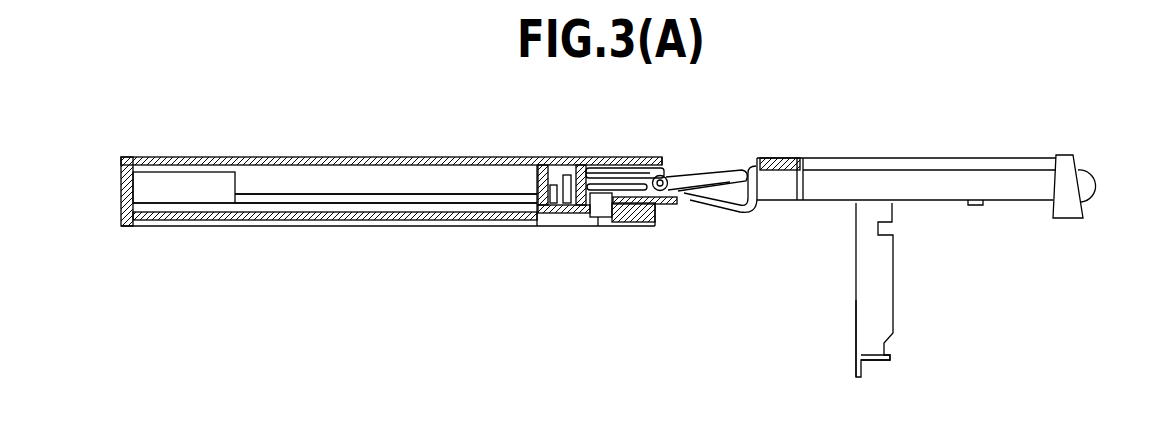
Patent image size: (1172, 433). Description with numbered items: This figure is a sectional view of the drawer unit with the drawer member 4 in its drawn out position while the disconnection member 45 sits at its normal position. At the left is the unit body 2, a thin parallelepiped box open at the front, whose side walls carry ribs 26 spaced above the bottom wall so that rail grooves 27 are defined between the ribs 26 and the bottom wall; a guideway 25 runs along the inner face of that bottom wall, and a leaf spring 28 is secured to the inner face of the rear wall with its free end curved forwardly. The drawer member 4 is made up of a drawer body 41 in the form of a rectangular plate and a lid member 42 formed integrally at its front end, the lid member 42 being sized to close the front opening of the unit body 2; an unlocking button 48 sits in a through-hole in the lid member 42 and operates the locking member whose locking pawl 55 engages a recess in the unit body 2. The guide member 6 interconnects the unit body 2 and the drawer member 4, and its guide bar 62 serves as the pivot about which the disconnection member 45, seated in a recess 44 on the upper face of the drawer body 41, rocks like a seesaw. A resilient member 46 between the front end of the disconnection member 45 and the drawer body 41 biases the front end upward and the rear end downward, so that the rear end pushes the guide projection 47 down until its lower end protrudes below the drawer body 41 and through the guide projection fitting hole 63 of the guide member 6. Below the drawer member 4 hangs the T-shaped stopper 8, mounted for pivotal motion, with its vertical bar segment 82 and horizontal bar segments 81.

The unit body 2 is at (376, 157).
The drawer member 4 is at (912, 156).
The guide member 6 is at (531, 176).
The stopper 8 is at (895, 302).
The guideway 25 is at (585, 222).
The ribs 26 is at (305, 200).
The rail grooves 27 is at (266, 220).
The leaf spring 28 is at (193, 185).
The drawer body 41 is at (837, 175).
The lid member 42 is at (1068, 160).
The recess 44 is at (746, 175).
The disconnection member 45 is at (706, 180).
The resilient member 46 is at (722, 205).
The guide projection 47 is at (605, 222).
The unlocking button 48 is at (1086, 185).
The locking pawl 55 is at (975, 206).
The guide bar 62 is at (659, 175).
The guide projection fitting hole 63 is at (578, 222).
The horizontal bar segments 81 is at (877, 365).
The vertical bar segment 82 is at (870, 312).